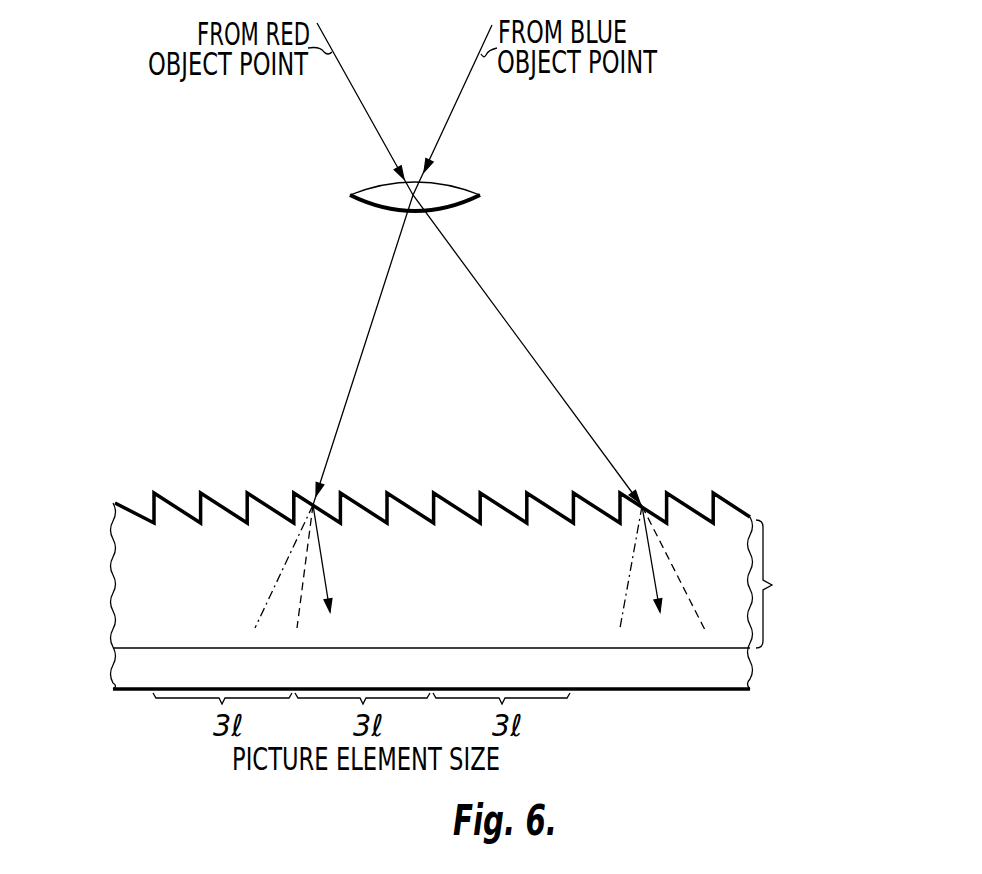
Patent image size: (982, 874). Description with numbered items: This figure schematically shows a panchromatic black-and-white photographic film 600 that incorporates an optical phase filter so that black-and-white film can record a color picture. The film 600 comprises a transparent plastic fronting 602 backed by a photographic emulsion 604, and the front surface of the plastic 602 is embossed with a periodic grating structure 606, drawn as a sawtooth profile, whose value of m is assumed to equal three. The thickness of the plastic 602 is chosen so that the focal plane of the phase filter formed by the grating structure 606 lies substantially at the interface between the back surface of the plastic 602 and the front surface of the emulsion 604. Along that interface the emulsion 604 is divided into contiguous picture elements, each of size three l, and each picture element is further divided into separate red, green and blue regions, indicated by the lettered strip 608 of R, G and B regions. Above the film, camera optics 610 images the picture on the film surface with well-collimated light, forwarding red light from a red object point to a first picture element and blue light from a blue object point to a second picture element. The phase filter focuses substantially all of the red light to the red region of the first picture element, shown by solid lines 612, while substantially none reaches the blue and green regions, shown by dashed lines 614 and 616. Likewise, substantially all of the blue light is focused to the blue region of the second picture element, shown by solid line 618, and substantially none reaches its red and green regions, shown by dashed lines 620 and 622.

The panchromatic black-and-white photographic film 600 is at (475, 482).
The transparent plastic fronting 602 is at (813, 584).
The photographic emulsion 604 is at (727, 673).
The periodic grating structure 606 is at (177, 505).
The color strip pattern 608 is at (126, 647).
The camera optics 610 is at (477, 194).
The solid lines 612 is at (655, 583).
The dashed line 614 is at (634, 550).
The dashed line 616 is at (676, 573).
The solid line 618 is at (324, 571).
The dashed line 620 is at (292, 547).
The dashed line 622 is at (303, 577).